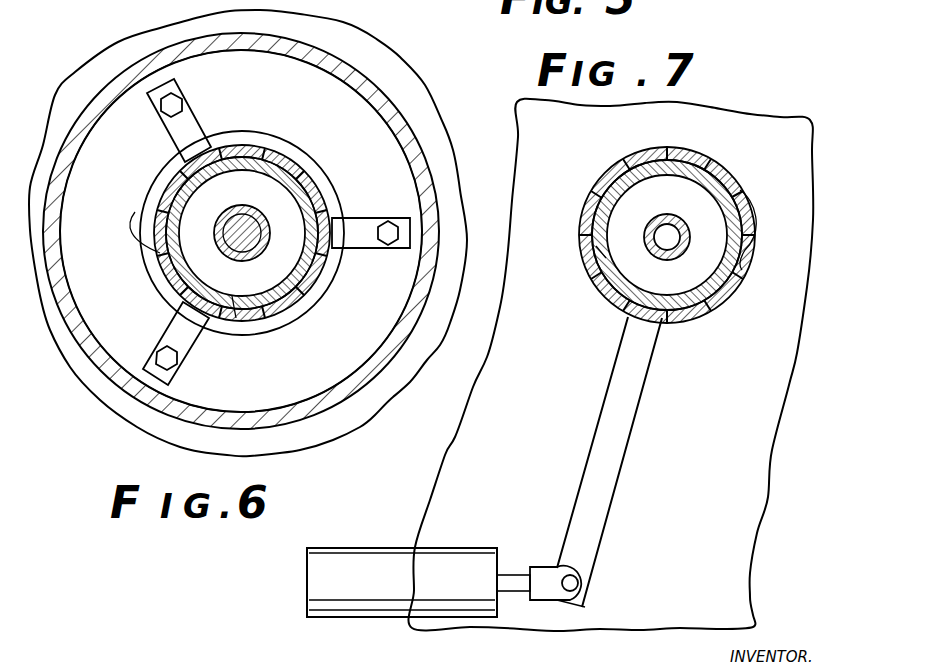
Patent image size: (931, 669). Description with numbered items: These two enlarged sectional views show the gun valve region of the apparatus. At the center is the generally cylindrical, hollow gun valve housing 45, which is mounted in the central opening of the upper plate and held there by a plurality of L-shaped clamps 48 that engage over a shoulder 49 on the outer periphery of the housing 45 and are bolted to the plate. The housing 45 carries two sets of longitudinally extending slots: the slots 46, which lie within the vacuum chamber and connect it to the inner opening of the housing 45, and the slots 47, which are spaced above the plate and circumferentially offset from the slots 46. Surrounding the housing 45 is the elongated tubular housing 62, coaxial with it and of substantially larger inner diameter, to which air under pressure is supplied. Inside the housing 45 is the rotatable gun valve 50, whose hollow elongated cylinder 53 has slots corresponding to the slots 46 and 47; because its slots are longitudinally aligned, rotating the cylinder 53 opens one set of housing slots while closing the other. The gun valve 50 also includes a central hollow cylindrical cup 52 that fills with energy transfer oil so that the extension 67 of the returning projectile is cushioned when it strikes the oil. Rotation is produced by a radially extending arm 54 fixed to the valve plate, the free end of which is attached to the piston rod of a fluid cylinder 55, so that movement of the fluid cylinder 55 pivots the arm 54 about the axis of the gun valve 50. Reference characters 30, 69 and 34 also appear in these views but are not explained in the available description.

In FIG. 6, the rotary wheel assembly 30 is at (350, 66).
In FIG. 6, the tubular housing 62 is at (415, 130).
In FIG. 6, the wheel web 69 is at (113, 330).
In FIG. 6, the shoulder 49 is at (298, 148).
In FIG. 6, the L-shaped clamps 48 is at (168, 128).
In FIG. 6, the gun valve housing 45 is at (246, 145).
In FIG. 7, the gun valve housing 45 is at (727, 302).
In FIG. 6, the hollow elongated cylinder 53 is at (287, 297).
In FIG. 7, the hollow elongated cylinder 53 is at (620, 170).
In FIG. 6, the hollow cylindrical cup 52 is at (270, 247).
In FIG. 7, the hollow cylindrical cup 52 is at (667, 213).
In FIG. 6, the extension 67 is at (250, 190).
In FIG. 6, the slots 47 is at (163, 207).
In FIG. 6, the gun valve 50 is at (230, 296).
In FIG. 7, the gun valve 50 is at (602, 250).
In FIG. 7, the mounting plate 34 is at (782, 439).
In FIG. 7, the radially extending arm 54 is at (600, 460).
In FIG. 7, the fluid cylinder 55 is at (342, 560).
In FIG. 7, the slots 46 is at (747, 238).